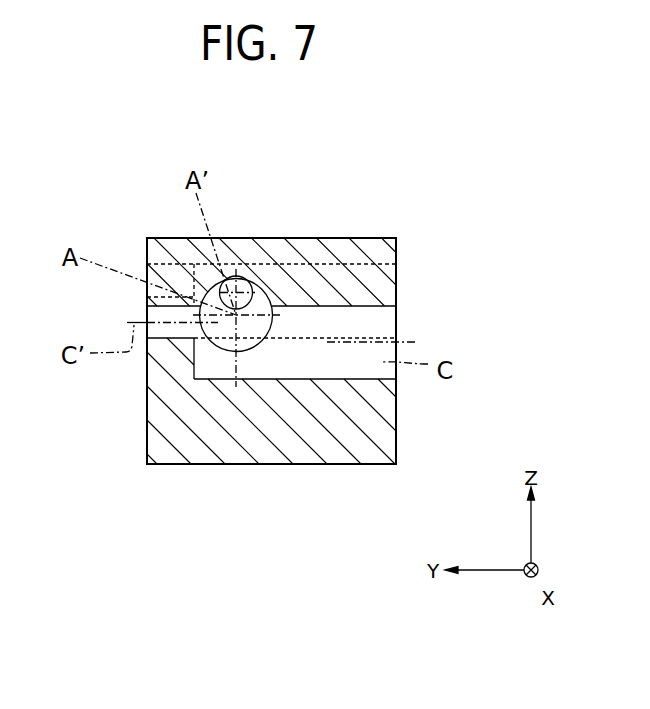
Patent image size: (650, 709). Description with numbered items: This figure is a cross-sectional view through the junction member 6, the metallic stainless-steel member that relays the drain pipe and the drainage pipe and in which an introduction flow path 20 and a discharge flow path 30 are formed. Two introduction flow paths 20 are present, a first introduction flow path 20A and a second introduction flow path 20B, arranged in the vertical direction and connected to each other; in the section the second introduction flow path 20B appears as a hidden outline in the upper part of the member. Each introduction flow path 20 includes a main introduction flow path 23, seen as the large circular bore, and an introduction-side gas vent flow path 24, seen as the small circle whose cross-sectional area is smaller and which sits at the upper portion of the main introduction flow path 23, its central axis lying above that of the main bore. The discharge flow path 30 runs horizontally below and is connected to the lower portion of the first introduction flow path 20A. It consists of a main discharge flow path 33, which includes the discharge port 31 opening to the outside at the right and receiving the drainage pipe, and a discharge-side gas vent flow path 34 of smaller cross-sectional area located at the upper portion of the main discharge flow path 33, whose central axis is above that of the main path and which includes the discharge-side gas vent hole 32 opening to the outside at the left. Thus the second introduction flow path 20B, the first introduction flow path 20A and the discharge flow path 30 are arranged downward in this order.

The junction member 6 is at (147, 238).
The introduction flow path 20 is at (298, 343).
The first introduction flow path 20A is at (258, 352).
The second introduction flow path 20B is at (322, 262).
The main introduction flow path 23 is at (216, 349).
The introduction-side gas vent flow path 24 is at (247, 276).
The discharge flow path 30 is at (360, 304).
The discharge port 31 is at (396, 332).
The discharge-side gas vent hole 32 is at (147, 312).
The main discharge flow path 33 is at (343, 380).
The discharge-side gas vent flow path 34 is at (178, 340).